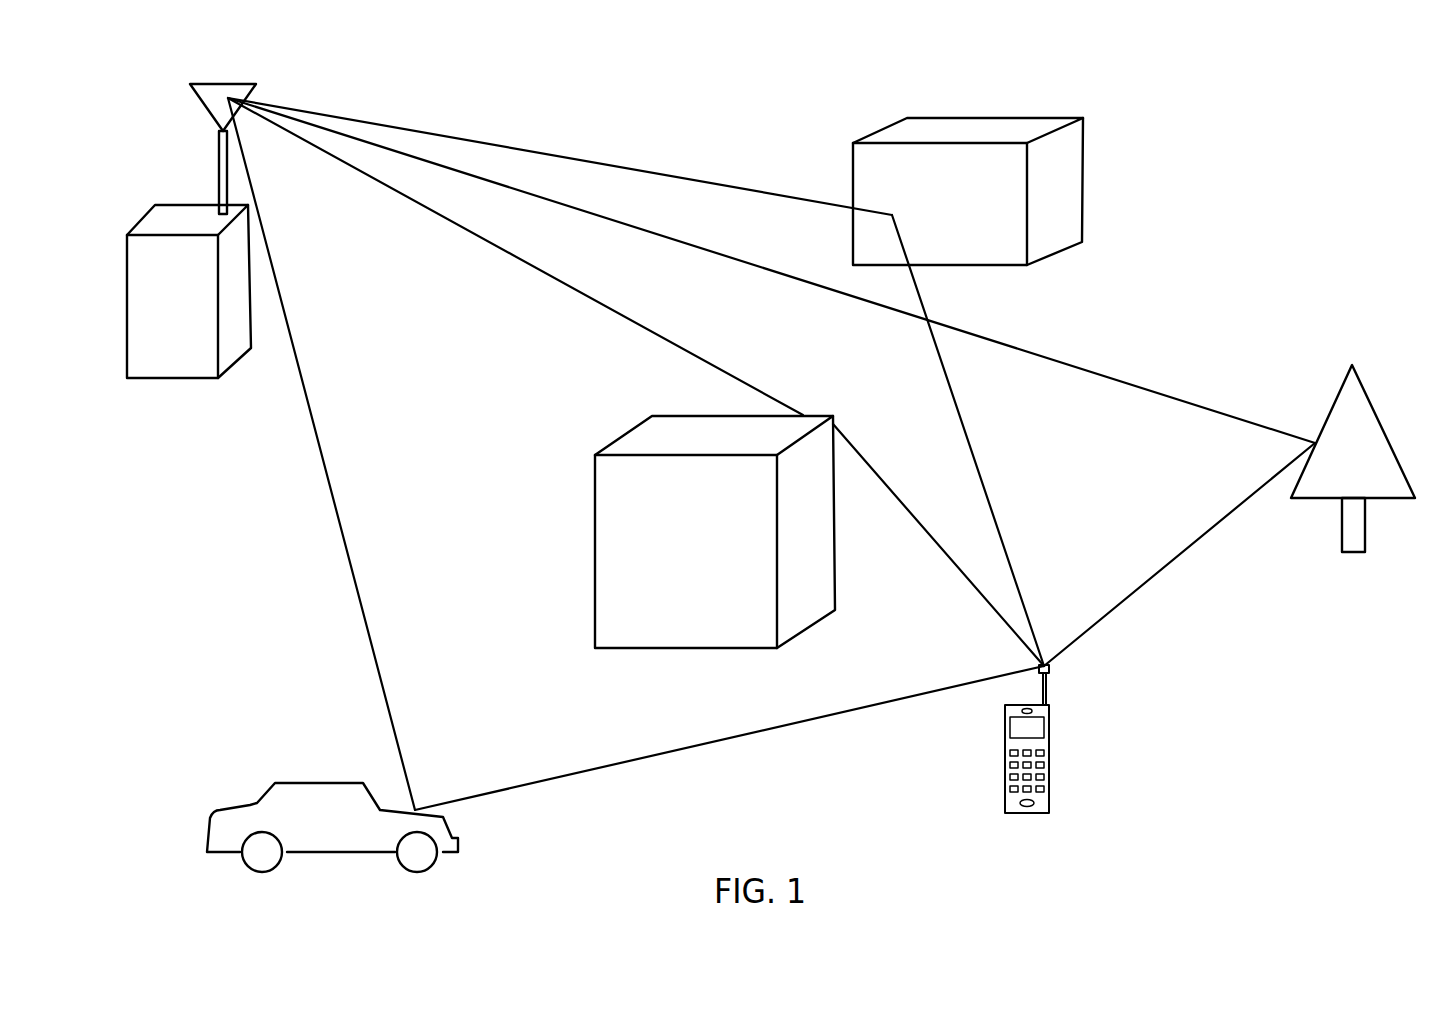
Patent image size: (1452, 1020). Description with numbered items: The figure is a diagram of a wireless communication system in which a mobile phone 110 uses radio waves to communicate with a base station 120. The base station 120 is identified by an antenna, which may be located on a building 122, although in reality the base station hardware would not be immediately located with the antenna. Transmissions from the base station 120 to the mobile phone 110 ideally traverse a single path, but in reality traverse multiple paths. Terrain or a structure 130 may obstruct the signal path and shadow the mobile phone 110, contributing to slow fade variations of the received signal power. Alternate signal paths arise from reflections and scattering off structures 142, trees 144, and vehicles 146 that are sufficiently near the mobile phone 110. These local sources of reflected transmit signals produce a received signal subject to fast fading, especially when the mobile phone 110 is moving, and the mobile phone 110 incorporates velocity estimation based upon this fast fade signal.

The mobile phone 110 is at (1027, 813).
The base station 120 is at (218, 83).
The building 122 is at (175, 205).
The structure 130 is at (676, 649).
The structures 142 is at (1007, 118).
The trees 144 is at (1383, 421).
The vehicles 146 is at (326, 783).